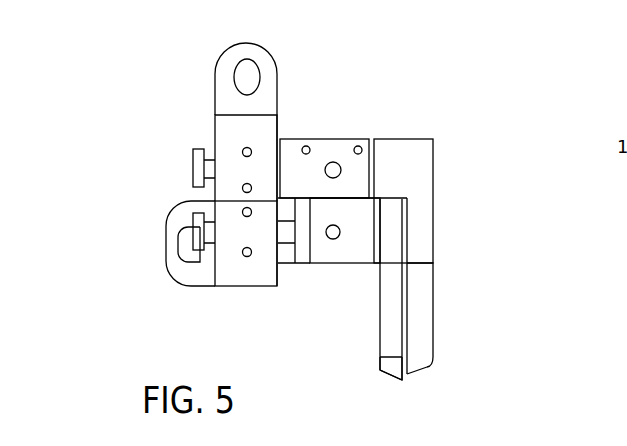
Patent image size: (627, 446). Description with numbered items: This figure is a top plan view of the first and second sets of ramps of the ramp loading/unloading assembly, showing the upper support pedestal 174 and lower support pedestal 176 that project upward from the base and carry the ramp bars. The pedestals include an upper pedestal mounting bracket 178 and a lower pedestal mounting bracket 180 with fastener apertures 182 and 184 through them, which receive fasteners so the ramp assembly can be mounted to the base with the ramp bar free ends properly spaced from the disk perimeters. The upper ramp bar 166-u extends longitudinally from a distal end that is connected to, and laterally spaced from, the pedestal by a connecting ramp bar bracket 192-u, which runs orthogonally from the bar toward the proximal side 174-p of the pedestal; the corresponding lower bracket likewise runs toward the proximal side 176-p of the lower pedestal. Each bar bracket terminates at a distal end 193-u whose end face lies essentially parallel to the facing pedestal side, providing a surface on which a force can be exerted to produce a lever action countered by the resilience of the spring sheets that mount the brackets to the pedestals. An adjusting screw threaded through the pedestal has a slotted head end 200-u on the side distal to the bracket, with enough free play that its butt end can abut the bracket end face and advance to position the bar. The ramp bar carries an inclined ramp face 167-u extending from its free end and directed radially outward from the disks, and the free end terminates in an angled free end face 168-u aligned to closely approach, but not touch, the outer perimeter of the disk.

The upper support pedestal 174 is at (218, 288).
The proximal side of upper pedestal 174-p is at (292, 265).
The lower support pedestal 176 is at (222, 140).
The proximal side of lower pedestal 176-p is at (279, 123).
The upper pedestal mounting bracket 178 is at (167, 221).
The lower pedestal mounting bracket 180 is at (212, 56).
The fastener aperture 182 is at (185, 243).
The fastener aperture 184 is at (242, 77).
The upper connecting ramp bar bracket 192-u is at (338, 250).
The distal end of upper bar bracket 193-u is at (292, 260).
The slotted head end of upper adjusting screw 200-u is at (195, 245).
The upper ramp bar 166-u is at (379, 337).
The inclined ramp face of upper ramp bar 167-u is at (378, 380).
The free end face of upper ramp bar 168-u is at (397, 382).